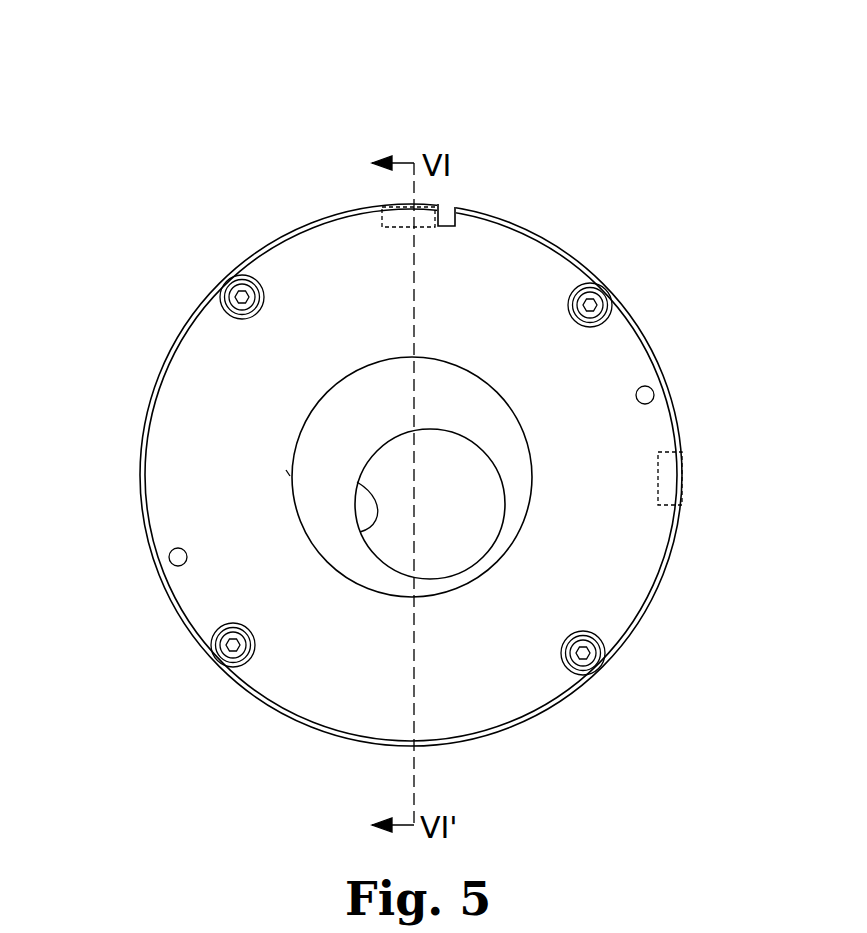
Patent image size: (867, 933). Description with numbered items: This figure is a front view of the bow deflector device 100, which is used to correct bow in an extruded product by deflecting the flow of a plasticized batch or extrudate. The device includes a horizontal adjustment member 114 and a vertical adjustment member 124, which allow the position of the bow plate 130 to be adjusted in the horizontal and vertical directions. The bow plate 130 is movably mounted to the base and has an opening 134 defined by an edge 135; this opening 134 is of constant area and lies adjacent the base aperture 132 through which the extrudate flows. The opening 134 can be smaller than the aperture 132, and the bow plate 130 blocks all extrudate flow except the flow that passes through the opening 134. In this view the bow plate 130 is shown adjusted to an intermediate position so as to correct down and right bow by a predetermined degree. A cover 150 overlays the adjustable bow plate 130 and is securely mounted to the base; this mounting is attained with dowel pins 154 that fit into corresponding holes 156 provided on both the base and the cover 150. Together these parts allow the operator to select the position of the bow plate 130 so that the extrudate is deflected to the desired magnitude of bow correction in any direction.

The bow deflector device 100 is at (199, 36).
The horizontal adjustment member 114 is at (668, 474).
The vertical adjustment member 124 is at (404, 192).
The bow plate 130 is at (347, 422).
The aperture 132 is at (346, 278).
The opening 134 is at (436, 513).
The edge 135 is at (360, 532).
The cover 150 is at (520, 722).
The dowel pins 154 is at (243, 282).
The holes 156 is at (238, 292).